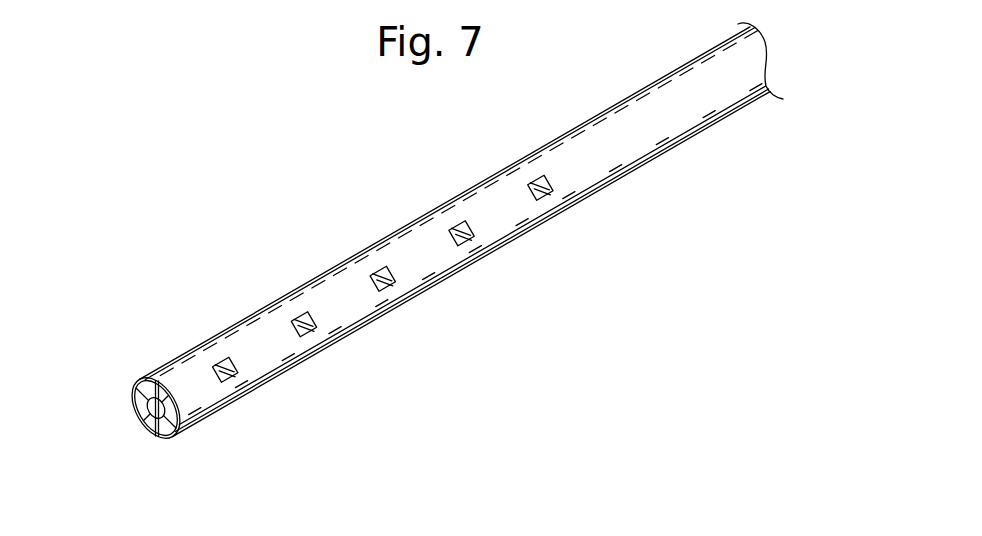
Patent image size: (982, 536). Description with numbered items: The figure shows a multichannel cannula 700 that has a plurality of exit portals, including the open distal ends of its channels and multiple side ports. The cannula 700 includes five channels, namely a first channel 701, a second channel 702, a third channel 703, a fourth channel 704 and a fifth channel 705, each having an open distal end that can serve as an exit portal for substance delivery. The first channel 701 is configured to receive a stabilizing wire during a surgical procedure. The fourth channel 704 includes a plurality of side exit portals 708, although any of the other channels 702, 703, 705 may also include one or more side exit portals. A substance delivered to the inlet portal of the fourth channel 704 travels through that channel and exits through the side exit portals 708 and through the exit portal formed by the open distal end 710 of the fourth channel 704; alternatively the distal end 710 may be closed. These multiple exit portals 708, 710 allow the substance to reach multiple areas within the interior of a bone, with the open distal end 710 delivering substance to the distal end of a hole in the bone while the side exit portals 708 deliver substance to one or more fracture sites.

The multichannel cannula 700 is at (362, 202).
The first channel 701 is at (151, 437).
The second channel 702 is at (134, 418).
The third channel 703 is at (132, 389).
The fourth channel 704 is at (154, 380).
The fifth channel 705 is at (172, 438).
The side exit portals 708 is at (402, 314).
The open distal end 710 is at (175, 386).